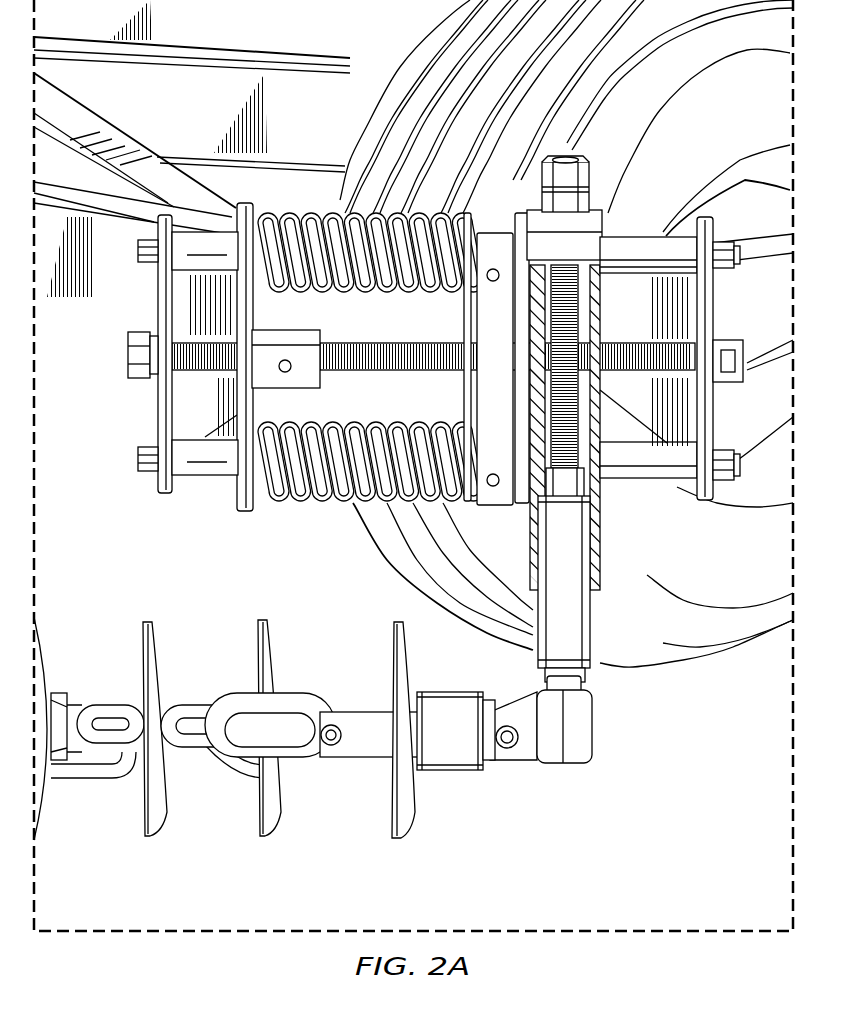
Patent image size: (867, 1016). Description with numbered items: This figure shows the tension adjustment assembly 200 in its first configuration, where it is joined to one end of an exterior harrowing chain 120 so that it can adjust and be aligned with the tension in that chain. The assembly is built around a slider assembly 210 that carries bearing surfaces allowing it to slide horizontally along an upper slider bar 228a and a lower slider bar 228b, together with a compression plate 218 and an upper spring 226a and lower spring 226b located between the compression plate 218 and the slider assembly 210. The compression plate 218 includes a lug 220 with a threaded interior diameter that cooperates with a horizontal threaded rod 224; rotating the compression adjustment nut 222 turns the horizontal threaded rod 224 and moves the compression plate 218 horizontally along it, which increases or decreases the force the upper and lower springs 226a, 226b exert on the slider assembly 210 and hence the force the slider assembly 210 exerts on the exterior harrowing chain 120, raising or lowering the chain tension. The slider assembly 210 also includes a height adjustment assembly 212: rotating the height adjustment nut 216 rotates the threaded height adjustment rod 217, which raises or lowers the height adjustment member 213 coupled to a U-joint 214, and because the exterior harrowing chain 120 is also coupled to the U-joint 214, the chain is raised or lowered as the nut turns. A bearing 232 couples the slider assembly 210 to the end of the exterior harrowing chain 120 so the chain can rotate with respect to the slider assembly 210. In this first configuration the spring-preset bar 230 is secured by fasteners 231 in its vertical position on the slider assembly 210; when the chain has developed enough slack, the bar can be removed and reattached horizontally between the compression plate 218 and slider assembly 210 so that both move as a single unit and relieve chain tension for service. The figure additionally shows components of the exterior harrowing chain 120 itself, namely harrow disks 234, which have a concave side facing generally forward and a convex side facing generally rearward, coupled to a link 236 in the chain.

The exterior harrowing chain 120 is at (264, 766).
The tension adjustment assembly 200 is at (431, 437).
The slider assembly 210 is at (581, 437).
The height adjustment assembly 212 is at (603, 686).
The height adjustment member 213 is at (600, 630).
The U-joint 214 is at (598, 732).
The height adjustment nut 216 is at (584, 150).
The threaded height adjustment rod 217 is at (600, 326).
The compression plate 218 is at (242, 494).
The lug 220 is at (282, 330).
The compression adjustment nut 222 is at (128, 355).
The horizontal threaded rod 224 is at (216, 372).
The upper spring 226a is at (402, 213).
The lower spring 226b is at (322, 505).
The upper slider bar 228a is at (640, 236).
The lower slider bar 228b is at (658, 482).
The spring-preset bar 230 is at (472, 370).
The fasteners 231 is at (493, 268).
The bearing 232 is at (447, 772).
The harrow disk 234 is at (291, 729).
The link 236 is at (247, 680).